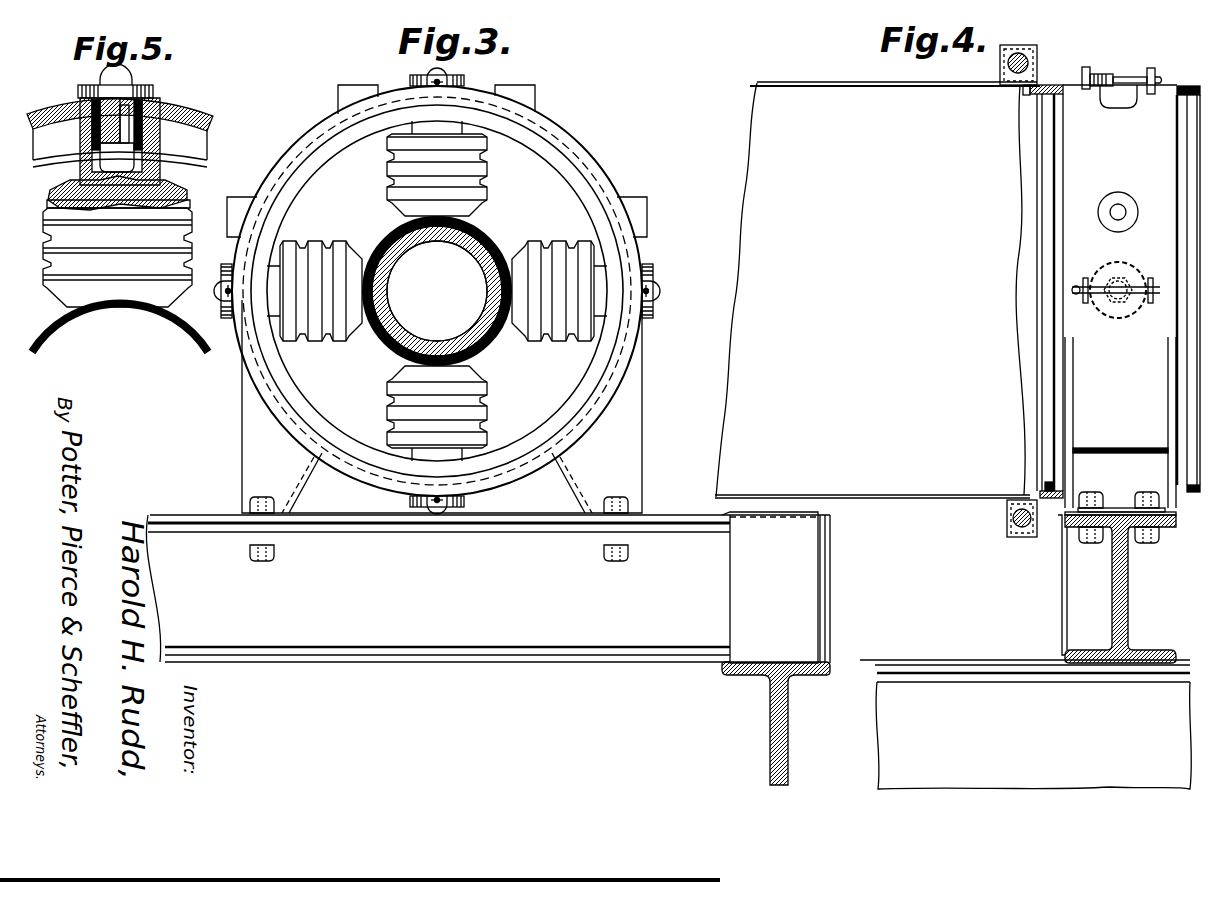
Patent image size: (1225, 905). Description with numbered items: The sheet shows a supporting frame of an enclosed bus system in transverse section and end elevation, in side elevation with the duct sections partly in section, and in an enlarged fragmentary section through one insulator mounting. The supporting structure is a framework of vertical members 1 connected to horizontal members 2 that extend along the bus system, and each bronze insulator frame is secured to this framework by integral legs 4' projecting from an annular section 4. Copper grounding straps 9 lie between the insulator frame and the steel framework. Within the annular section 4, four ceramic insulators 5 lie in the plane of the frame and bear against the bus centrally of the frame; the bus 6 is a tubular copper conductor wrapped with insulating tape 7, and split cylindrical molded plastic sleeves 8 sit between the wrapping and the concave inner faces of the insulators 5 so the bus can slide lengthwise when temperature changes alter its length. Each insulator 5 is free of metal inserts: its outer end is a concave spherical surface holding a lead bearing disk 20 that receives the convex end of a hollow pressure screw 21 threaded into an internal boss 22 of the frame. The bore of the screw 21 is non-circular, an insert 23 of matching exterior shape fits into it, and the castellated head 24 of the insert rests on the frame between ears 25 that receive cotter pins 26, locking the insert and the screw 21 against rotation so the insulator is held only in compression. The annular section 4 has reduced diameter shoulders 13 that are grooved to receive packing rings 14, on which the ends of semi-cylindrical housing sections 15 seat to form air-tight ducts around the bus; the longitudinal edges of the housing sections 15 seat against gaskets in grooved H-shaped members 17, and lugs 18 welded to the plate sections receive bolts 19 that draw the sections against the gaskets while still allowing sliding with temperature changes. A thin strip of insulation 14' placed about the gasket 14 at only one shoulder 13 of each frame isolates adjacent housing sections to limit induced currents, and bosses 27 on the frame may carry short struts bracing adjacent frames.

In FIG. 3, the vertical members 1 is at (770, 728).
In FIG. 4, the vertical members 1 is at (960, 675).
In FIG. 3, the horizontal members 2 is at (619, 640).
In FIG. 4, the horizontal members 2 is at (1128, 581).
In FIG. 3, the annular section 4 is at (437, 291).
In FIG. 4, the annular section 4 is at (1122, 84).
In FIG. 5, the annular section 4 is at (122, 108).
In FIG. 3, the integral legs 4' is at (461, 406).
In FIG. 4, the integral legs 4' is at (1080, 426).
In FIG. 3, the insulators 5 is at (396, 202).
In FIG. 5, the insulators 5 is at (192, 226).
In FIG. 3, the conductors or buses 6 is at (406, 348).
In FIG. 3, the insulating tape 7 is at (404, 341).
In FIG. 3, the split cylindrical sleeves 8 is at (481, 251).
In FIG. 5, the split cylindrical sleeves 8 is at (128, 308).
In FIG. 3, the copper straps 9 is at (730, 573).
In FIG. 4, the copper straps 9 is at (1062, 598).
In FIG. 4, the reduced diameter shoulders 13 is at (1037, 169).
In FIG. 4, the packing rings 14 is at (1093, 291).
In FIG. 4, the strip of insulation 14' is at (1193, 520).
In FIG. 4, the semi-cylindrical housing sections 15 is at (891, 492).
In FIG. 4, the H-shaped members 17 is at (946, 498).
In FIG. 4, the lugs 18 is at (1017, 44).
In FIG. 4, the bolts 19 is at (1008, 64).
In FIG. 5, the lead bearing disks 20 is at (175, 180).
In FIG. 5, the hollow pressure screws 21 is at (64, 174).
In FIG. 5, the internal bosses 22 is at (153, 128).
In FIG. 5, the inserts 23 is at (156, 110).
In FIG. 3, the castellated heads 24 is at (465, 81).
In FIG. 4, the castellated heads 24 is at (1100, 89).
In FIG. 5, the castellated heads 24 is at (78, 93).
In FIG. 3, the ears 25 is at (447, 80).
In FIG. 4, the ears 25 is at (1091, 60).
In FIG. 5, the ears 25 is at (134, 86).
In FIG. 3, the cotter pins 26 is at (430, 80).
In FIG. 4, the cotter pins 26 is at (1125, 77).
In FIG. 5, the cotter pins 26 is at (100, 82).
In FIG. 3, the bosses 27 is at (339, 86).
In FIG. 4, the bosses 27 is at (1117, 193).